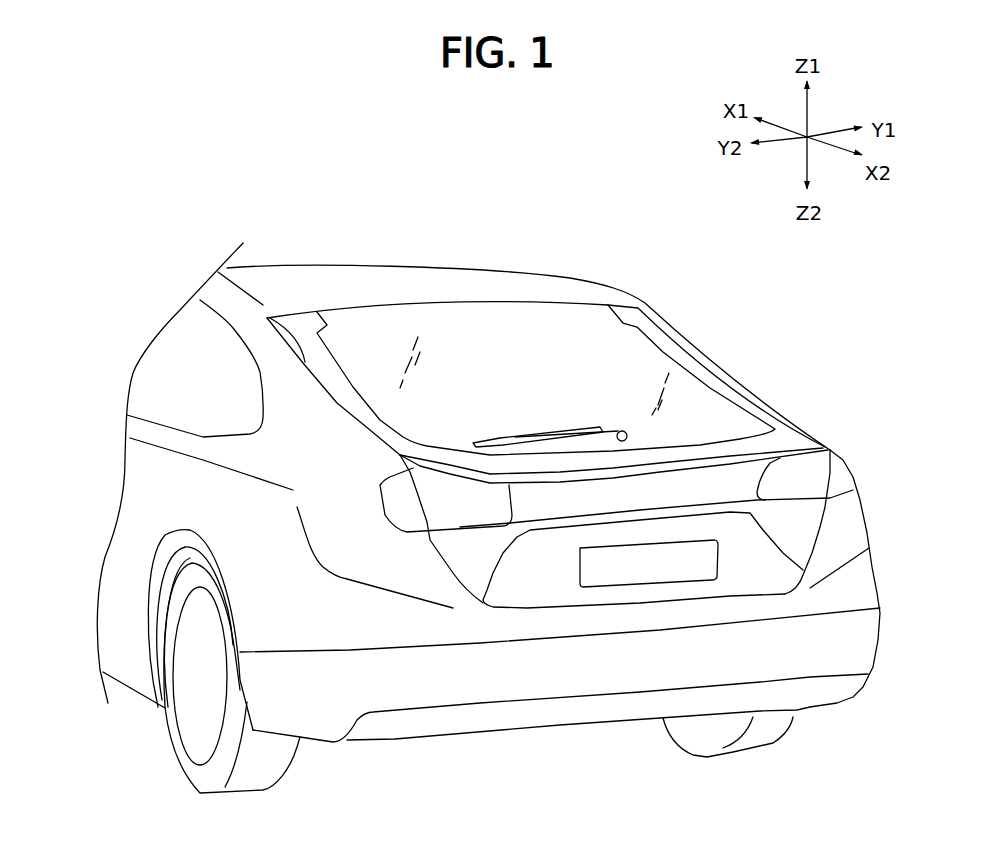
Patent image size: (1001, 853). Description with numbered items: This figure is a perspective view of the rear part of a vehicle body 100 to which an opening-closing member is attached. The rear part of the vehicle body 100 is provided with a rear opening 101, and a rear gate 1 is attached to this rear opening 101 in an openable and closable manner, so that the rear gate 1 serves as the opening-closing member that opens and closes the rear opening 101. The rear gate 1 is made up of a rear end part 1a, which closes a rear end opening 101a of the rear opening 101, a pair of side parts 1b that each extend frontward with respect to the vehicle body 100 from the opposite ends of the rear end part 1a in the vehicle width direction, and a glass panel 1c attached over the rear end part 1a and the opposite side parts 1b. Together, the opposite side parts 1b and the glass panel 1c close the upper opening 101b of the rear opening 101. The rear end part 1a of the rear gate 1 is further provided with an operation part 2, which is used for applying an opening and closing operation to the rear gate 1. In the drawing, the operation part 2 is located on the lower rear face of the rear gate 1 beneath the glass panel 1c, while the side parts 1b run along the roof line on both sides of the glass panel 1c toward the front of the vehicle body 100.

The rear gate 1 is at (573, 290).
The rear end part 1a is at (833, 518).
The side part 1b is at (726, 372).
The glass panel 1c is at (472, 323).
The operation part 2 is at (563, 562).
The vehicle body 100 is at (147, 510).
The rear opening 101 is at (267, 320).
The rear end opening 101a is at (820, 547).
The upper opening 101b is at (318, 403).